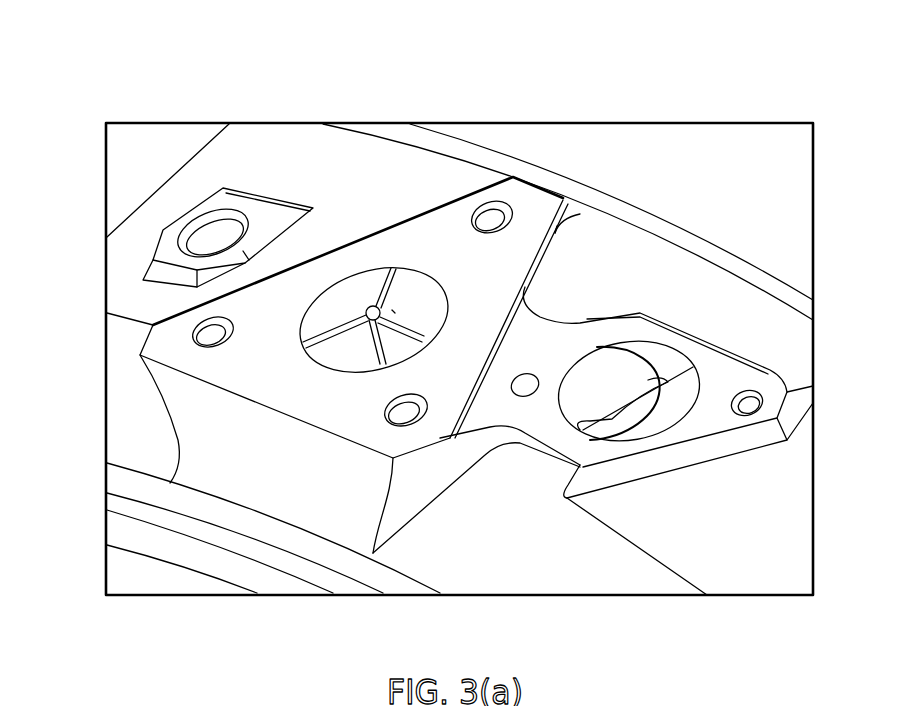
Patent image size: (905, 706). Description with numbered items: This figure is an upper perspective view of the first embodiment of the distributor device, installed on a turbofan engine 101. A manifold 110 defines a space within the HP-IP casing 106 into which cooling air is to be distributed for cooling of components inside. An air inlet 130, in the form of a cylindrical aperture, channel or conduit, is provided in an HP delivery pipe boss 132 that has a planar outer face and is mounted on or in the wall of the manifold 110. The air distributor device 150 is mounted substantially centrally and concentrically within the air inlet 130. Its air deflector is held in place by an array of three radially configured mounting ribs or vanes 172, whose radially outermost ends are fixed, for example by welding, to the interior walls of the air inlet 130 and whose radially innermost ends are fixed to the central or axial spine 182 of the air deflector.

The turbofan engine 101 is at (131, 626).
The HP-IP casing 106 is at (203, 173).
The manifold 110 is at (738, 535).
The air inlet 130 is at (312, 327).
The HP delivery pipe boss 132 is at (452, 218).
The air distributor device 150 is at (395, 313).
The mounting ribs or vanes 172 is at (417, 330).
The central or axial spine 182 is at (368, 323).